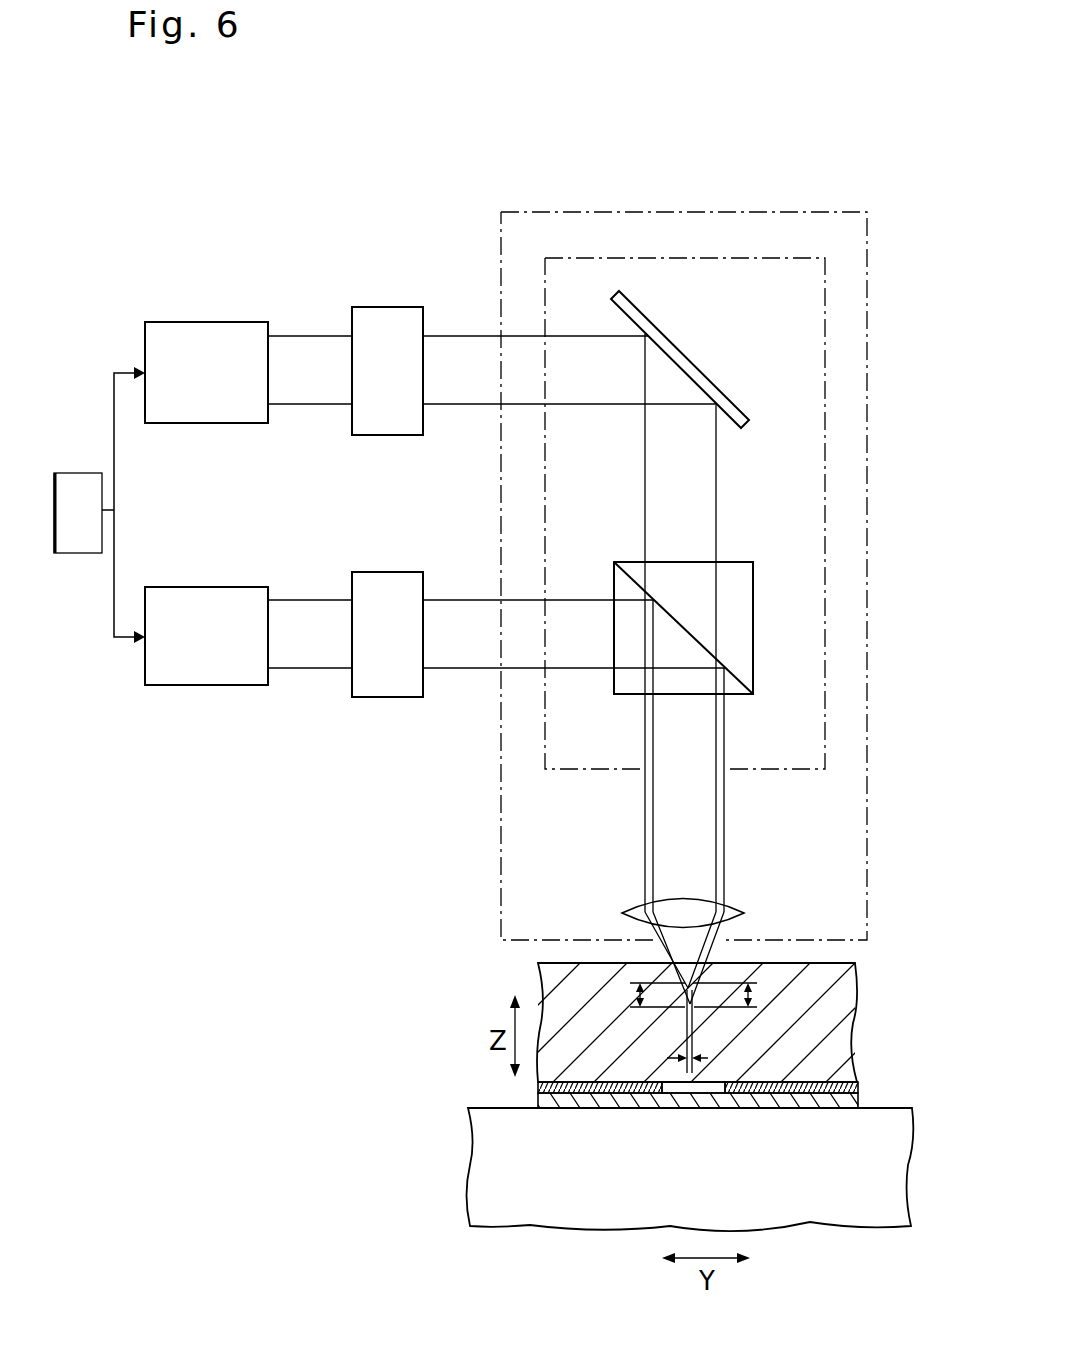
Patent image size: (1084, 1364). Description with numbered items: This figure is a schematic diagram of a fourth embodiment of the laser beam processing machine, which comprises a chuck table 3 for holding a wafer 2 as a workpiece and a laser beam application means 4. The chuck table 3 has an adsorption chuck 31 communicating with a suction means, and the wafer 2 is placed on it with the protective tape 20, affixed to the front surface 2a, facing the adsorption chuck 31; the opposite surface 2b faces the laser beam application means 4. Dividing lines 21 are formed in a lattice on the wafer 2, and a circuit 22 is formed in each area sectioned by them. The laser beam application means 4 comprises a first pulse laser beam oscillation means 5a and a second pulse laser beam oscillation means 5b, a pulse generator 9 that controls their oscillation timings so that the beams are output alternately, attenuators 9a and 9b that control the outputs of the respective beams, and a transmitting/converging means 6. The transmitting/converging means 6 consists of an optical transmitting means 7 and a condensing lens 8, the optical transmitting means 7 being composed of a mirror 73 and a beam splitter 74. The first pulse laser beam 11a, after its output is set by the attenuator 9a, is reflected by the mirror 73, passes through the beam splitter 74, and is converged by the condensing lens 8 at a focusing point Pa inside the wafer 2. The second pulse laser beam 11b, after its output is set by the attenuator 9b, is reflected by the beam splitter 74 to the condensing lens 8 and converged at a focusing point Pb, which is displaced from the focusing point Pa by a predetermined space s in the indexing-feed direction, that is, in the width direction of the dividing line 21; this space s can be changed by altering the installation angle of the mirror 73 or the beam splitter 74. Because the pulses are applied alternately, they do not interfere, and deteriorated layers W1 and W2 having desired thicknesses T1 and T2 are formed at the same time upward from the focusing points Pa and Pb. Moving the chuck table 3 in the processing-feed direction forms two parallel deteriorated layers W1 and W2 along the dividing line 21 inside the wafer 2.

The wafer 2 is at (842, 1019).
The front surface 2a is at (842, 1110).
The front surface of wafer 2b is at (830, 962).
The chuck table 3 is at (459, 1167).
The laser beam application means 4 is at (584, 158).
The first pulse laser beam oscillation means 5a is at (232, 322).
The second pulse laser beam oscillation means 5b is at (212, 685).
The transmitting/converging means 6 is at (790, 208).
The optical transmitting means 7 is at (832, 438).
The condensing lens 8 is at (727, 910).
The pulse generator 9 is at (80, 472).
The attenuator 9a is at (390, 307).
The attenuator 9b is at (390, 697).
The first pulse laser beam 11a is at (312, 336).
The second pulse laser beam 11b is at (310, 668).
The protective tape 20 is at (538, 1101).
The dividing line 21 is at (695, 1110).
The circuit 22 is at (600, 1110).
The adsorption chuck 31 is at (888, 1107).
The mirror 73 is at (683, 352).
The beam splitter 74 is at (755, 618).
The thickness T1 is at (644, 996).
The thickness T2 is at (739, 996).
The deteriorated layer W1 is at (683, 998).
The deteriorated layer W2 is at (692, 992).
The focusing point Pa is at (685, 1000).
The focusing point Pb is at (693, 997).
The space s is at (680, 1058).